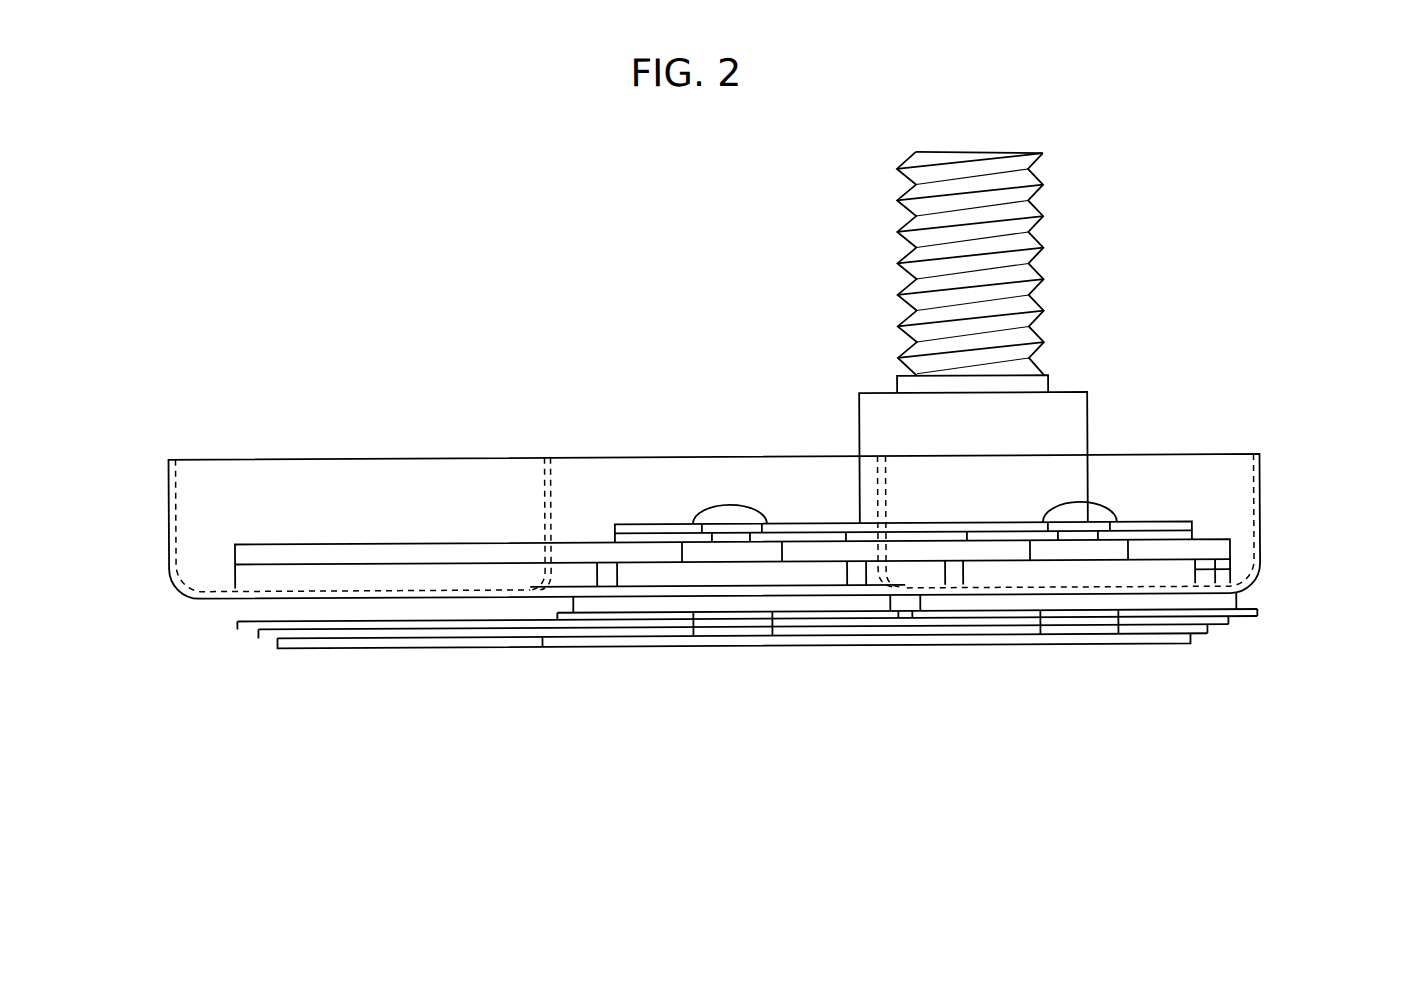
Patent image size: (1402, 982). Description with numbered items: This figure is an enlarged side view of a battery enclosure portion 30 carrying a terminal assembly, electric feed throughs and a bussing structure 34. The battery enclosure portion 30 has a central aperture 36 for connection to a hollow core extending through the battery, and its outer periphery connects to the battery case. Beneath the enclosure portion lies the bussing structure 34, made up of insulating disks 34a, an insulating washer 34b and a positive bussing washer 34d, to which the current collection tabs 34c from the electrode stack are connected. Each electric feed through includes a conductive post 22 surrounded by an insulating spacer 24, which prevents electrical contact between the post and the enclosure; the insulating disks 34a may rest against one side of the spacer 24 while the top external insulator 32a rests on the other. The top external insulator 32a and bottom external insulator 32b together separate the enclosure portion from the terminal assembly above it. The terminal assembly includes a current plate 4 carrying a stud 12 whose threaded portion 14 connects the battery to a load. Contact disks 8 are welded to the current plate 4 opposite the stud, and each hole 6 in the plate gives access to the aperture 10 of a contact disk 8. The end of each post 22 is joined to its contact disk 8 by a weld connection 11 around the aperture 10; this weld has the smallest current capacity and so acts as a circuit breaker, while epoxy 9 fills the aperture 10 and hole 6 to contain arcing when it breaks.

The current plate 4 is at (1177, 530).
The holes 6 is at (1088, 530).
The contact disk 8 is at (625, 527).
The epoxy 9 is at (740, 515).
The aperture 10 is at (728, 537).
The weld connection 11 is at (697, 525).
The stud 12 is at (870, 388).
The threaded portion 14 is at (1018, 230).
The conductive post 22 is at (733, 632).
The insulating spacer 24 is at (642, 574).
The battery enclosure portion 30 is at (169, 502).
The top external insulator 32a is at (245, 550).
The bottom external insulator 32b is at (247, 572).
The bussing structure 34 is at (758, 693).
The insulating disks 34a is at (1247, 618).
The insulating washer 34b is at (1215, 625).
The current collection tabs 34c is at (1195, 631).
The positive bussing washer 34d is at (475, 639).
The central aperture 36 is at (614, 474).